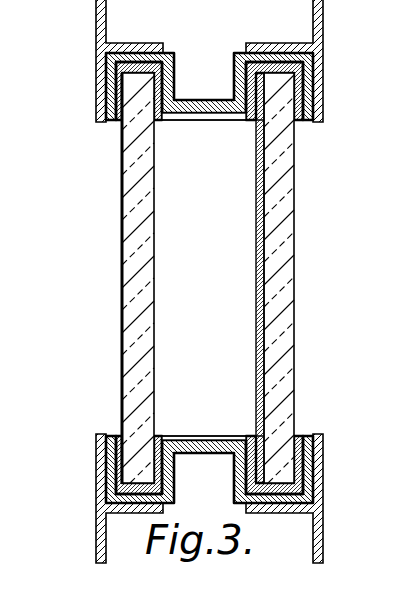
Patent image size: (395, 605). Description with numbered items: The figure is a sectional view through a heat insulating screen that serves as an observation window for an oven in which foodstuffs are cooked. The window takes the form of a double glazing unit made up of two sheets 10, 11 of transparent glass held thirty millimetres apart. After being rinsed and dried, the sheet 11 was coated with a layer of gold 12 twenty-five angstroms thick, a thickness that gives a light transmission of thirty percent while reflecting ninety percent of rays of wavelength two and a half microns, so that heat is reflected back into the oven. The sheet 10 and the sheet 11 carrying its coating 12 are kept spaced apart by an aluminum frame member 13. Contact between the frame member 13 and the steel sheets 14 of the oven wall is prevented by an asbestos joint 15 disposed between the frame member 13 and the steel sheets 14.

The sheet of transparent glass 10 is at (135, 247).
The sheet of transparent glass 11 is at (282, 240).
The layer of gold 12 is at (262, 242).
The aluminum frame member 13 is at (205, 116).
The steel sheets 14 is at (323, 84).
The asbestos joint 15 is at (310, 121).